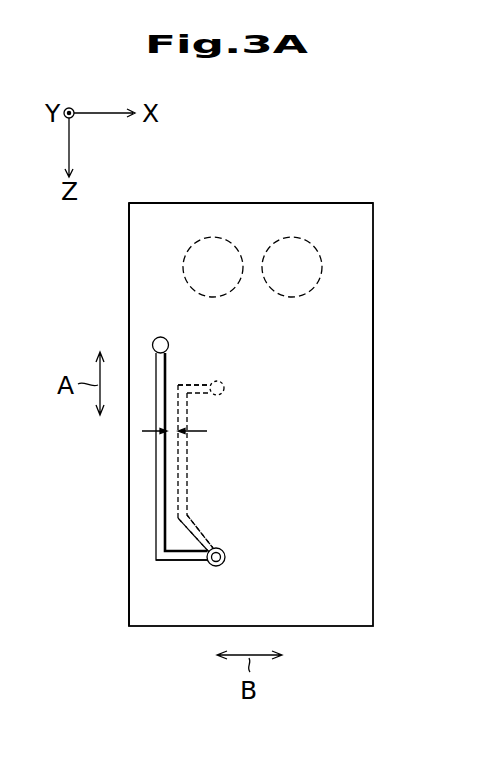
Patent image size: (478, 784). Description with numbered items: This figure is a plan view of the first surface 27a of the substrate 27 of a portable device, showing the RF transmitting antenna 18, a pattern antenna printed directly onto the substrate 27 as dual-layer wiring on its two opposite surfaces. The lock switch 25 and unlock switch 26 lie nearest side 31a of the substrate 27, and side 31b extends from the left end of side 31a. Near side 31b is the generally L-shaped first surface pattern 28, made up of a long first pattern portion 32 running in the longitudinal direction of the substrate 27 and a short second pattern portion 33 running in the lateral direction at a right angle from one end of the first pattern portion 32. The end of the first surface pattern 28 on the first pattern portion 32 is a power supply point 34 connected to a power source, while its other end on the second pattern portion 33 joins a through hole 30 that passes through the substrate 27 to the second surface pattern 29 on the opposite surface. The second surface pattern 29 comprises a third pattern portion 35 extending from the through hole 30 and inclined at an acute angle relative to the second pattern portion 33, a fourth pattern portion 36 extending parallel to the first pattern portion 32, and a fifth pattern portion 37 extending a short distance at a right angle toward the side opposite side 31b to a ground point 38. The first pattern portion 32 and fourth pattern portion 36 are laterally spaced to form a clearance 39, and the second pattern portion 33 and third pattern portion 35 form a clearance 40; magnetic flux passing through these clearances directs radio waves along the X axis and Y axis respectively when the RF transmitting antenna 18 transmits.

The RF transmitting antenna 18 is at (227, 358).
The lock switch 25 is at (213, 237).
The unlock switch 26 is at (292, 237).
The substrate 27 is at (373, 512).
The first surface 27a is at (373, 333).
The first surface pattern 28 is at (155, 448).
The second surface pattern 29 is at (189, 450).
The through hole 30 is at (226, 556).
The side 31a is at (354, 203).
The side 31b is at (129, 262).
The first pattern portion 32 is at (162, 487).
The second pattern portion 33 is at (185, 561).
The power supply point 34 is at (160, 337).
The third pattern portion 35 is at (200, 530).
The fourth pattern portion 36 is at (189, 488).
The fifth pattern portion 37 is at (197, 383).
The ground point 38 is at (225, 388).
The clearance 39 is at (175, 431).
The clearance 40 is at (177, 543).